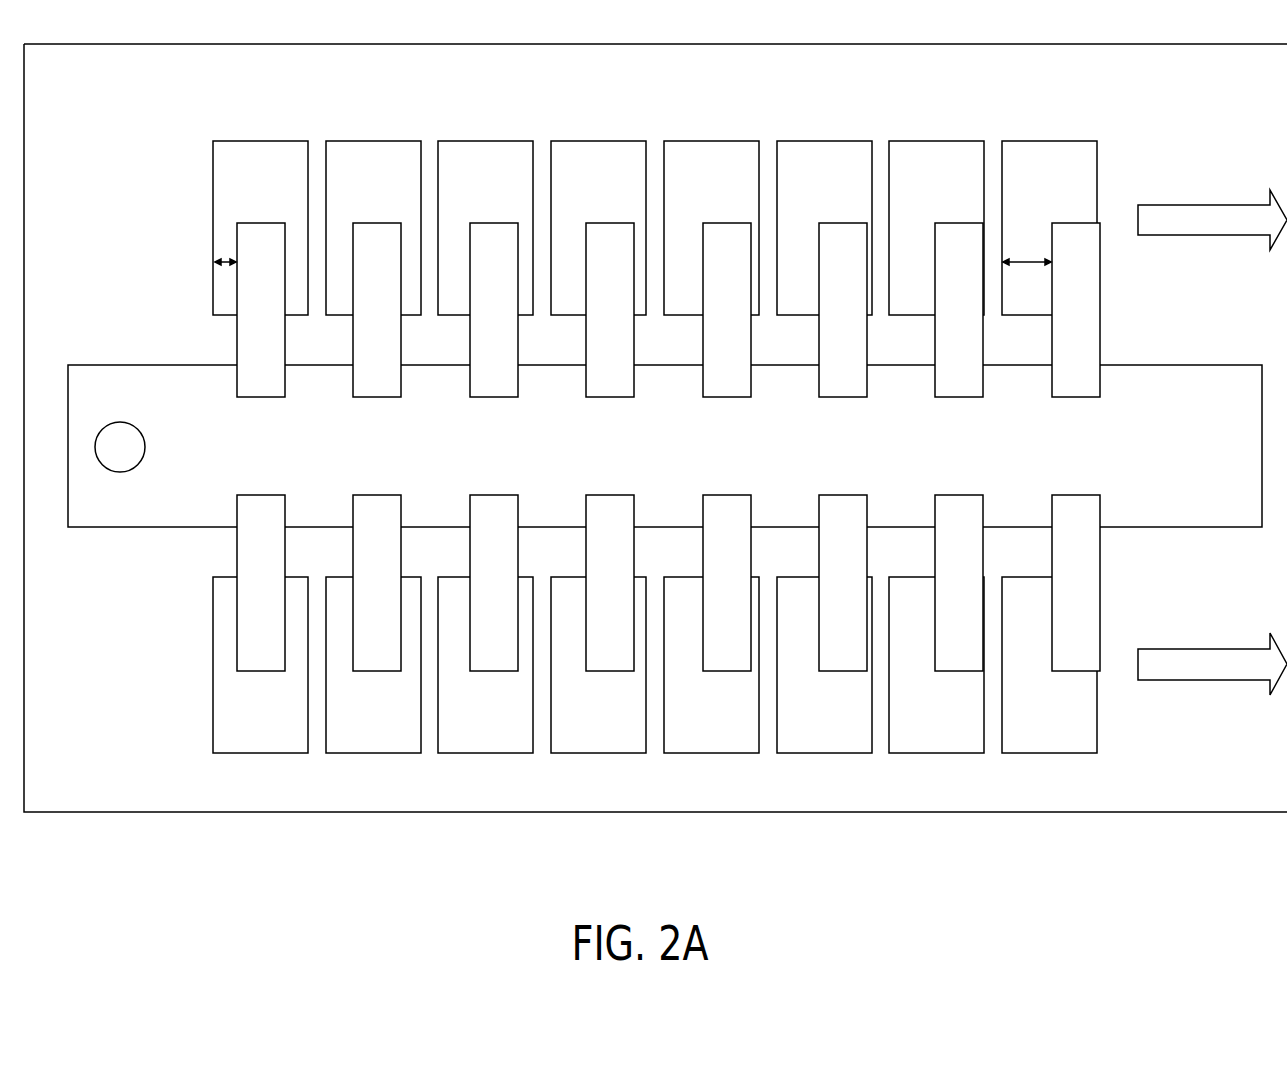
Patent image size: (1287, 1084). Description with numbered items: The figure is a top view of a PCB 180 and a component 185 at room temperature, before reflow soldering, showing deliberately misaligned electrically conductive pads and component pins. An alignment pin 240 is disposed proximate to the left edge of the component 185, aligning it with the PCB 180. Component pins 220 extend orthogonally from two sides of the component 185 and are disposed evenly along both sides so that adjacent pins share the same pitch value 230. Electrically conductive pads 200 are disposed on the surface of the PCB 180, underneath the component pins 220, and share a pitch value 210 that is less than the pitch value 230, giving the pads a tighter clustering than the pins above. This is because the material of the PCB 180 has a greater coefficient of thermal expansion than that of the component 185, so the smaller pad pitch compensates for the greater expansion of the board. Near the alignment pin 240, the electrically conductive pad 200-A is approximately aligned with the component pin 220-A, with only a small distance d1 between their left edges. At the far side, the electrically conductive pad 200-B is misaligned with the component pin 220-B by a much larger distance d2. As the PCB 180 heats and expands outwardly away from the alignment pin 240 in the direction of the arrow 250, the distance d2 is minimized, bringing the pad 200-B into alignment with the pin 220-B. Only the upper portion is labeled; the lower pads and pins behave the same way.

The PCB 180 is at (1168, 161).
The component 185 is at (1168, 456).
The electrically conductive pads 200 is at (655, 186).
The electrically conductive pad 200-A is at (234, 196).
The electrically conductive pad 200-B is at (1049, 228).
The pitch value 210 is at (261, 136).
The component pins 220 is at (668, 354).
The component pin 220-A is at (274, 283).
The component pin 220-B is at (1076, 310).
The pitch value 230 is at (261, 400).
The alignment pin 240 is at (105, 458).
The arrow 250 is at (1187, 232).
The distance d1 is at (225, 252).
The distance d2 is at (1027, 252).